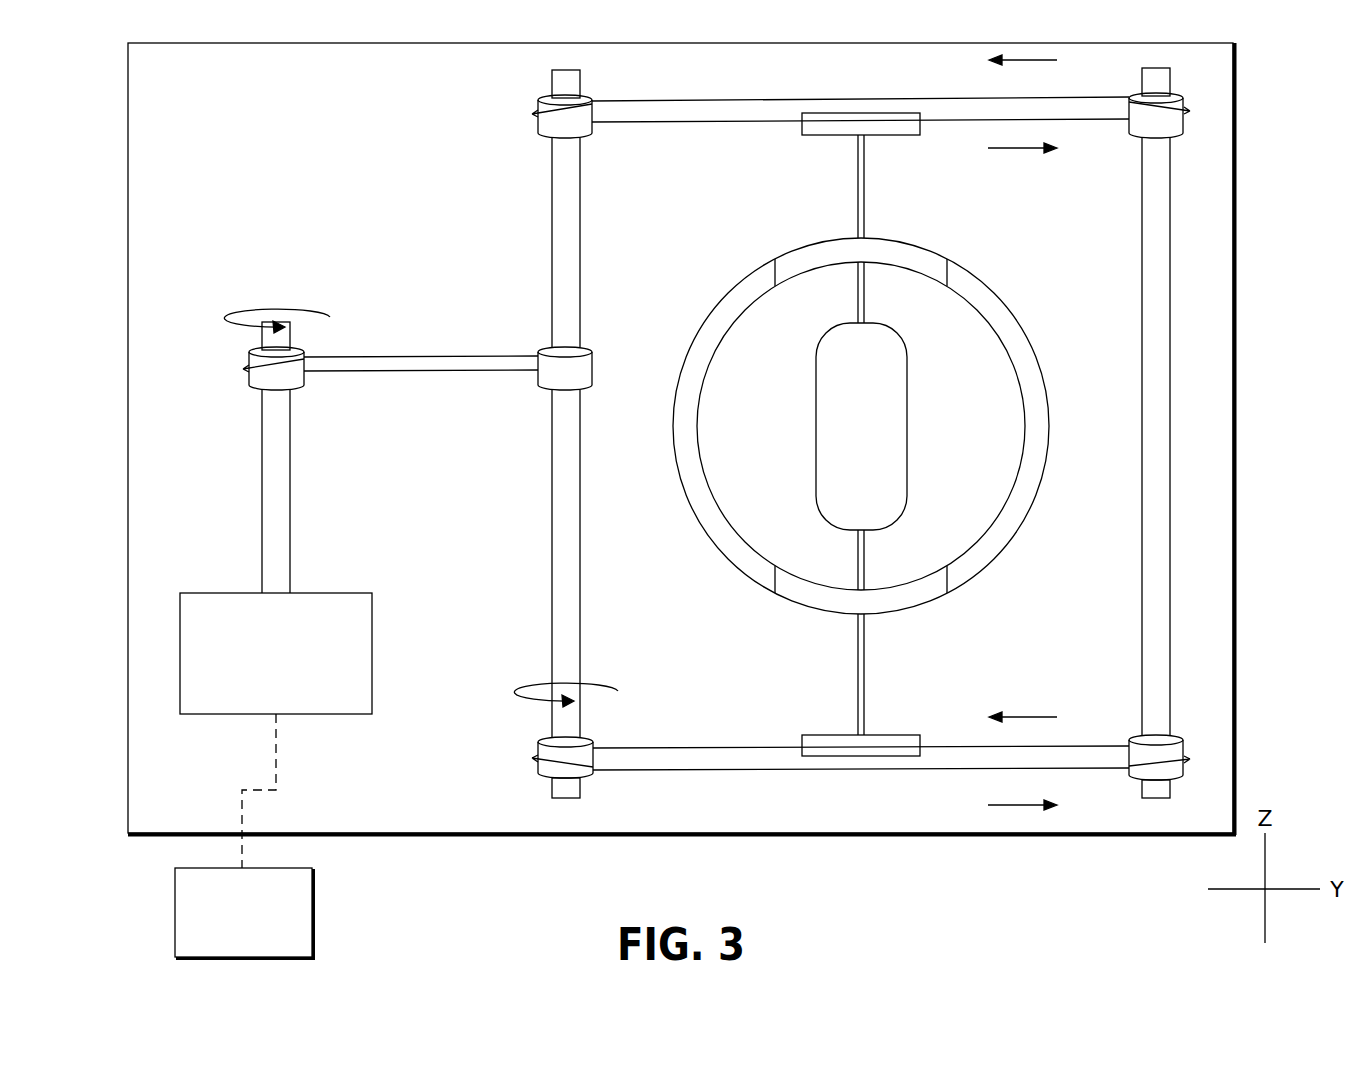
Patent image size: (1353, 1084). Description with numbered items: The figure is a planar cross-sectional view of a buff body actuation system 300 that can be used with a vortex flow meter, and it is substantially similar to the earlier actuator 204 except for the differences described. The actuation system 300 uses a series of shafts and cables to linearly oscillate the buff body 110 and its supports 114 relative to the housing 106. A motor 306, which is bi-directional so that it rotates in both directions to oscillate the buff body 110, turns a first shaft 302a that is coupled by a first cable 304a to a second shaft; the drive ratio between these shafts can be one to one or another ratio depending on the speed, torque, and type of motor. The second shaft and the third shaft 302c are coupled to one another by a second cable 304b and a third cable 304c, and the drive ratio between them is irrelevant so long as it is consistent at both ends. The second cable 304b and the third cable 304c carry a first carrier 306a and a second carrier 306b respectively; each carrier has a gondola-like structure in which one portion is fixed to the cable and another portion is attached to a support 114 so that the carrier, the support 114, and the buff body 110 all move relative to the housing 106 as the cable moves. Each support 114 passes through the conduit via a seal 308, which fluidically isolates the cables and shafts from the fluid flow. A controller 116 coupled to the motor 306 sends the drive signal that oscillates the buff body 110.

The buff body actuation system 300 is at (1280, 132).
The actuator 204 is at (114, 546).
The first shaft 302a is at (570, 246).
The third shaft 302c is at (1155, 630).
The first cable 304a is at (430, 352).
The second cable 304b is at (708, 100).
The third cable 304c is at (668, 772).
The motor 306 is at (342, 705).
The first carrier 306a is at (892, 133).
The second carrier 306b is at (913, 717).
The seal 308 is at (930, 255).
The housing 106 is at (998, 313).
The support 114 is at (863, 287).
The buff body 110 is at (897, 365).
The controller 116 is at (264, 927).